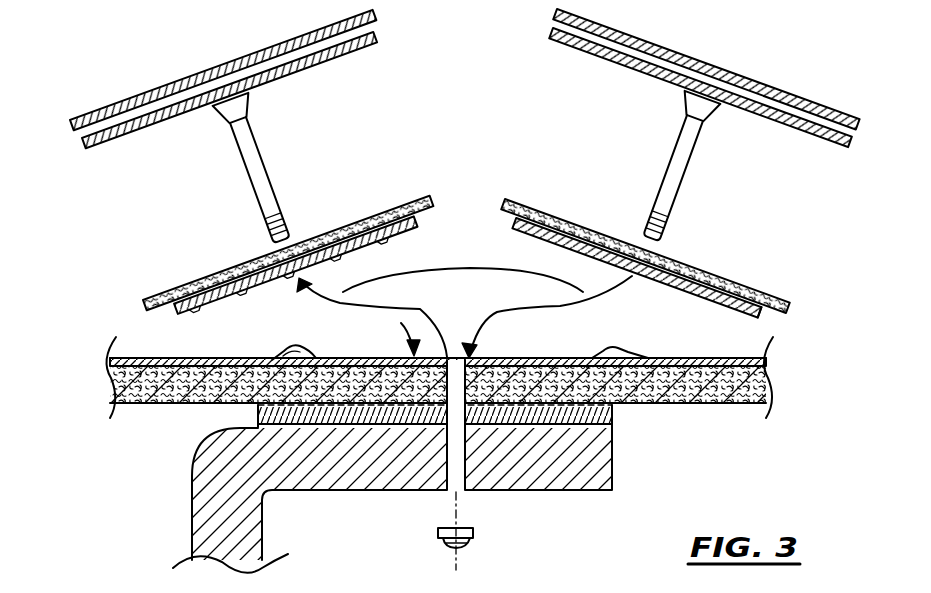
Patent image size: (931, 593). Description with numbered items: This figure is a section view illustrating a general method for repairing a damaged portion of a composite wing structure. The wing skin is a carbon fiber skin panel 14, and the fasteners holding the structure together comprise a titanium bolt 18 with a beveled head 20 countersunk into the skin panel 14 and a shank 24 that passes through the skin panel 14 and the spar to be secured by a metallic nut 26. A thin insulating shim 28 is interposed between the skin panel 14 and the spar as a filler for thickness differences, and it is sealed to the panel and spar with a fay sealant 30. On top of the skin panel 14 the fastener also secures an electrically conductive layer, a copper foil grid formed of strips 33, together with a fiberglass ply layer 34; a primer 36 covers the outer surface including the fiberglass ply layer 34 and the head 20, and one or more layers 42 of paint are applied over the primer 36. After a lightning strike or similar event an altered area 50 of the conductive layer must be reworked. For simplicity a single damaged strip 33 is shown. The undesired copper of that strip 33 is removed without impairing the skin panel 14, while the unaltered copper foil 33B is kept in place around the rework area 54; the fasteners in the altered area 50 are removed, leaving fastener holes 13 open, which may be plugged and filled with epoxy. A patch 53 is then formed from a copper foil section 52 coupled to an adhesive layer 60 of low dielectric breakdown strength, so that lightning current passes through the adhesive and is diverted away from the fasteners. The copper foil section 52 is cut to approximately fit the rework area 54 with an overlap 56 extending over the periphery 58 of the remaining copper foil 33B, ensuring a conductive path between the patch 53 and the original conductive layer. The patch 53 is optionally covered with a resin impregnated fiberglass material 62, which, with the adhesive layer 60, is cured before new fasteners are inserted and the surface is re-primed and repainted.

The fastener hole 13 is at (453, 388).
The skin panel 14 is at (108, 390).
The bolt 18 is at (466, 167).
The beveled head 20 is at (250, 102).
The shank 24 is at (268, 183).
The metallic nut 26 is at (470, 543).
The shim 28 is at (613, 413).
The fay sealant 30 is at (258, 422).
The strip 33 is at (252, 298).
The unaltered copper foil 33B is at (338, 338).
The fiberglass ply layer 34 is at (108, 360).
The primer 36 is at (84, 142).
The layer of paint 42 is at (70, 124).
The altered area 50 is at (477, 267).
The copper foil section 52 is at (651, 245).
The patch 53 is at (634, 236).
The rework area 54 is at (464, 317).
The overlap 56 is at (760, 312).
The periphery 58 is at (322, 353).
The adhesive layer 60 is at (692, 300).
The resin impregnated fiberglass material 62 is at (526, 200).